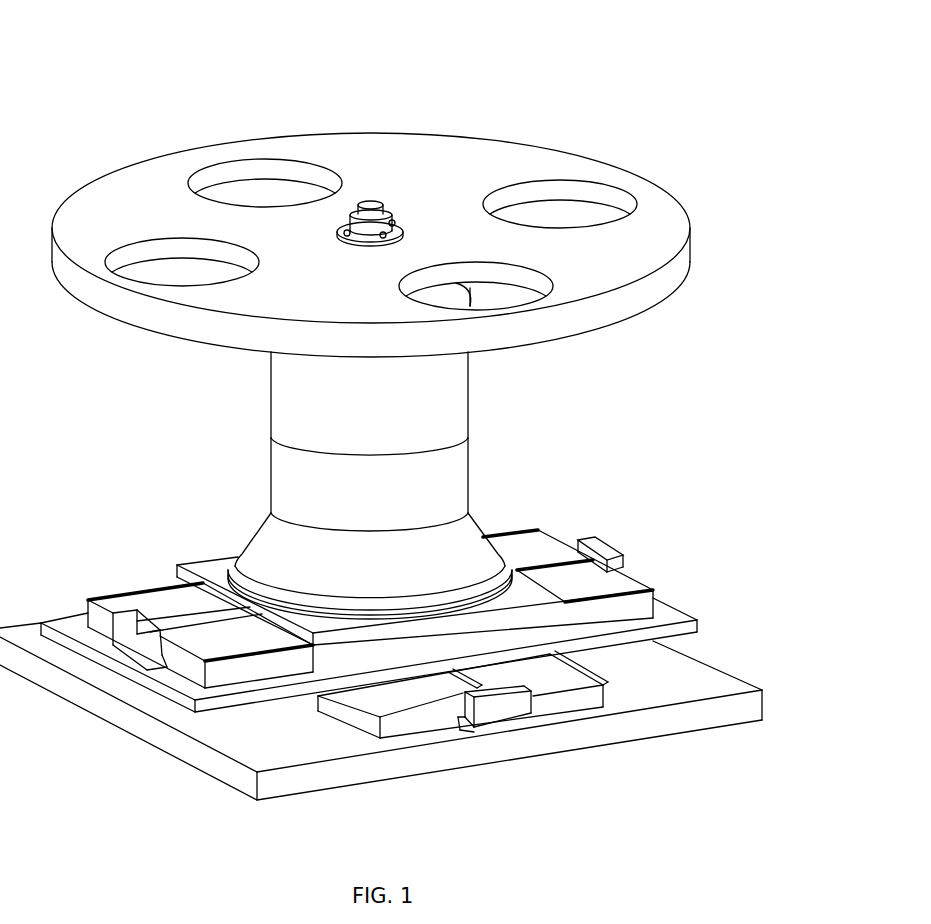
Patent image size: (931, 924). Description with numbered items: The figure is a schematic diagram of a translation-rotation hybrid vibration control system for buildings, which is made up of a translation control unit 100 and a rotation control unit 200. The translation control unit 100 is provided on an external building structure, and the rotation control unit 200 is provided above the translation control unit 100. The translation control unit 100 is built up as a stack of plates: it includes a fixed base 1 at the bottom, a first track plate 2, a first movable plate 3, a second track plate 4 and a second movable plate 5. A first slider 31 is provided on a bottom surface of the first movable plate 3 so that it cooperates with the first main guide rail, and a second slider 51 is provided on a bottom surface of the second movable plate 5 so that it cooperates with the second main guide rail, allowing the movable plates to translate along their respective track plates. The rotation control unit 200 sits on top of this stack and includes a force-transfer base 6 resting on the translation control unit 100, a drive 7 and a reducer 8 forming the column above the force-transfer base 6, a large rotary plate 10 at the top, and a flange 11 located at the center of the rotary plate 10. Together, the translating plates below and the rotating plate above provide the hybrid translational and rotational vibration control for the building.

The fixed base 1 is at (710, 700).
The first track plate 2 is at (556, 724).
The first movable plate 3 is at (105, 660).
The second track plate 4 is at (120, 592).
The second movable plate 5 is at (526, 592).
The force-transfer base 6 is at (258, 548).
The drive 7 is at (436, 496).
The reducer 8 is at (300, 398).
The rotary plate 10 is at (426, 172).
The flange 11 is at (338, 232).
The first slider 31 is at (480, 702).
The second slider 51 is at (222, 613).
The translation control unit 100 is at (656, 668).
The rotation control unit 200 is at (446, 400).